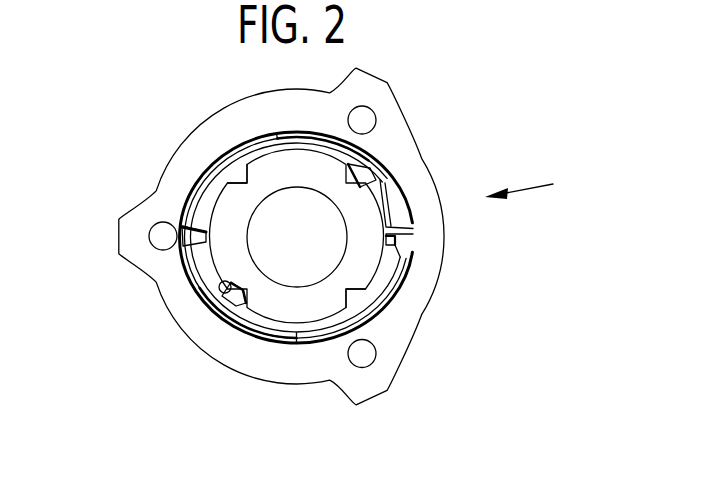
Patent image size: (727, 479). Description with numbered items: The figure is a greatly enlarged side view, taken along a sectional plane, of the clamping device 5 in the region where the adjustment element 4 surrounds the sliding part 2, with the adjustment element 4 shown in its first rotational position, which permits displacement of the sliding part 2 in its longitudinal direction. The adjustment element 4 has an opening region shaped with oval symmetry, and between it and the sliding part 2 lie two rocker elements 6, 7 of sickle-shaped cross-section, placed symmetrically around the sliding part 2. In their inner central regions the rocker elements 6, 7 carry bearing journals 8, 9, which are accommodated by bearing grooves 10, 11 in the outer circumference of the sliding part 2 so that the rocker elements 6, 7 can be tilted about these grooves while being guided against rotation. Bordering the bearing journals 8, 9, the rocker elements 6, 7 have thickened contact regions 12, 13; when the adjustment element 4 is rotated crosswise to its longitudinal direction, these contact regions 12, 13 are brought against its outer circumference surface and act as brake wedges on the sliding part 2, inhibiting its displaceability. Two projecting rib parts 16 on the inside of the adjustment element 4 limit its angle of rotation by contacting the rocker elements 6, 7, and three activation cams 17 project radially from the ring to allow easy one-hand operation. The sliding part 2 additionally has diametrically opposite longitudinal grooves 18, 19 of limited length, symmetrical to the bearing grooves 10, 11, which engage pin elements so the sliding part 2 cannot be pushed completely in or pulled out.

The sliding part 2 is at (235, 210).
The adjustment element 4 is at (408, 315).
The clamping device 5 is at (571, 196).
The rocker element 6 is at (388, 197).
The rocker element 7 is at (268, 330).
The bearing journal 8 is at (350, 172).
The bearing journal 9 is at (205, 330).
The bearing groove 10 is at (287, 147).
The bearing groove 11 is at (218, 293).
The contact region 12 is at (413, 213).
The contact region 13 is at (203, 262).
The rib part 16 is at (182, 225).
The activation cam 17 is at (383, 92).
The groove 18 is at (352, 291).
The groove 19 is at (240, 180).